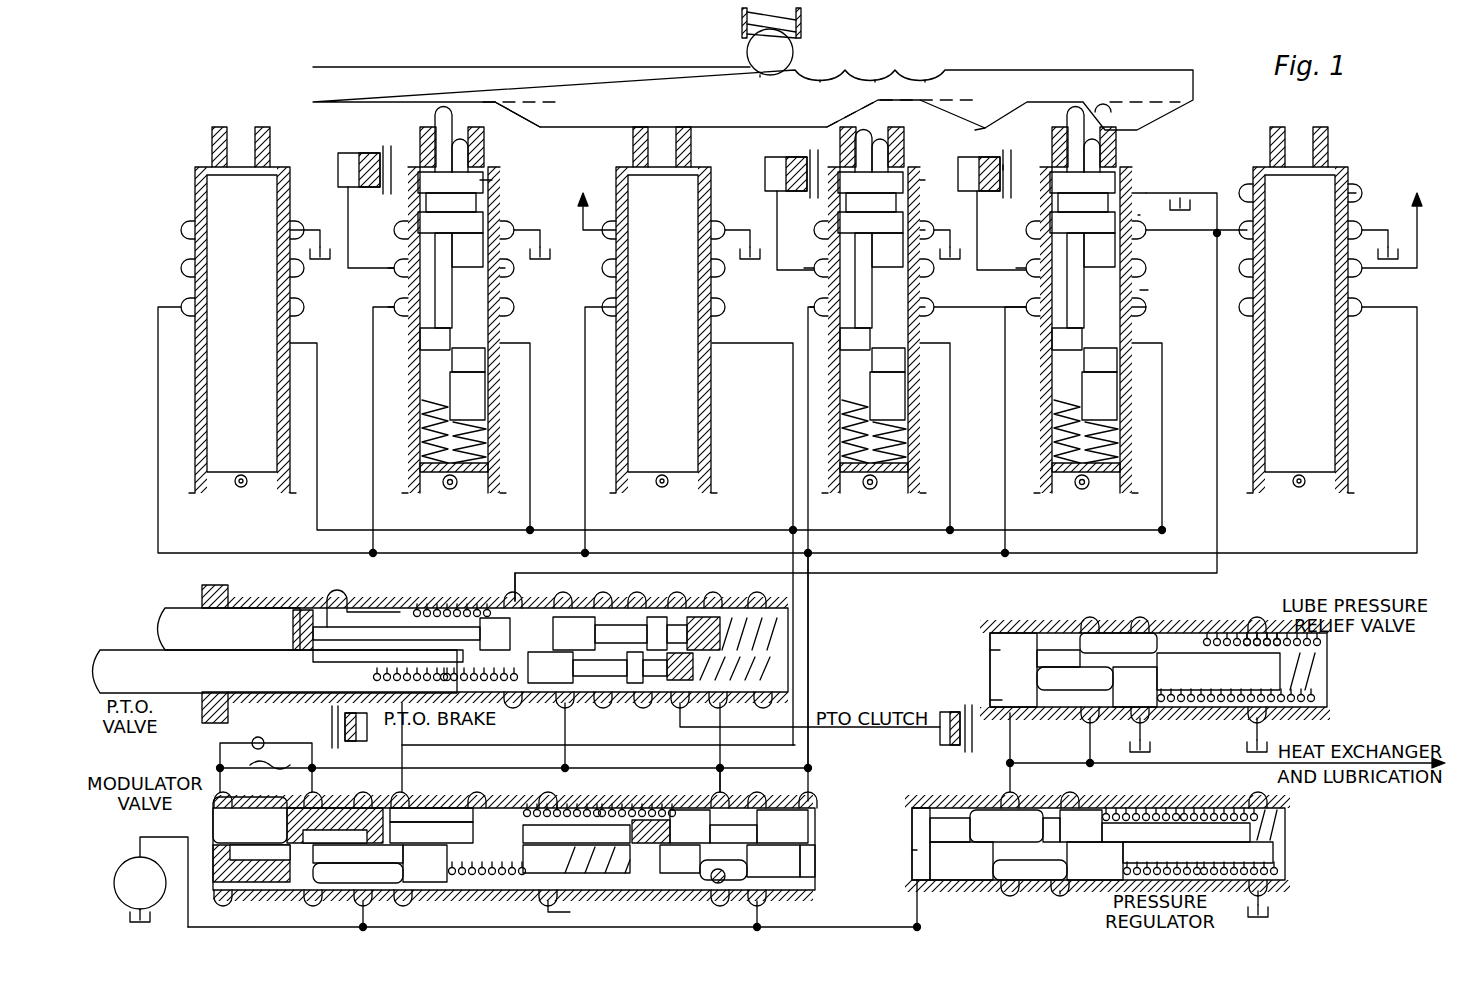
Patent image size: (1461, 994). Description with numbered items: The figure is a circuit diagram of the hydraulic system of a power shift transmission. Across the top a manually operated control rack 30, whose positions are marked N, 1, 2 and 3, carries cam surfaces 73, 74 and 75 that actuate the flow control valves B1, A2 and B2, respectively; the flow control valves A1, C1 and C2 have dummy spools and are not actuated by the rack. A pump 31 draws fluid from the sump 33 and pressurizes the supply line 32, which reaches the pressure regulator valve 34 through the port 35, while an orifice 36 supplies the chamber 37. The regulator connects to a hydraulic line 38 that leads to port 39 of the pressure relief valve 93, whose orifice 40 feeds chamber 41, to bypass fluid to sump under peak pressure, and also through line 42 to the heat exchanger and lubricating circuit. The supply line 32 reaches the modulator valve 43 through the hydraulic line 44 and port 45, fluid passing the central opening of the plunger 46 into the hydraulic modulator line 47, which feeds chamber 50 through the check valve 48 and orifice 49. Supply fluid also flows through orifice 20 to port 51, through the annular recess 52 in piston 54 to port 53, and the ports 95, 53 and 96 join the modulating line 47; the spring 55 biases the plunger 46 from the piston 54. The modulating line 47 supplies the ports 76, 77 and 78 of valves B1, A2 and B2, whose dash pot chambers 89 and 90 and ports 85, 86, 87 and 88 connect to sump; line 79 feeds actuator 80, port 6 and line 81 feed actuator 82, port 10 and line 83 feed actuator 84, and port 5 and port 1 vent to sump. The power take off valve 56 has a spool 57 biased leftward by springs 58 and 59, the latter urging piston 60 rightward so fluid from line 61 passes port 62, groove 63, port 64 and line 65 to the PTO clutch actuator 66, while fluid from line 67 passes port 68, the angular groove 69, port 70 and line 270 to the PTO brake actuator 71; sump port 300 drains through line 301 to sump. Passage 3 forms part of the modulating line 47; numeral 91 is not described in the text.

The control rack 30 is at (315, 100).
The neutral position N is at (770, 89).
The port 1 is at (979, 156).
The second gear position 2 is at (1170, 285).
The passage 3 is at (925, 89).
The cam surface 74 is at (975, 128).
The cam surface 75 is at (520, 132).
The cam surface 73 is at (1110, 117).
The flow control valve A1 is at (225, 120).
The flow control valve C1 is at (620, 165).
The flow control valve C2 is at (1342, 157).
The flow control valve B2 is at (425, 112).
The flow control valve A2 is at (915, 160).
The flow control valve B1 is at (1135, 160).
The hydraulic actuator 84 is at (372, 153).
The hydraulic line 83 is at (350, 207).
The hydraulic actuator line 81 is at (765, 205).
The hydraulic actuator 82 is at (813, 210).
The hydraulic actuator 80 is at (1004, 157).
The port 85 is at (1026, 161).
The hydraulic actuator line 79 is at (985, 220).
The port 86 is at (1018, 258).
The port 87 is at (810, 258).
The dash pot chamber 90 is at (492, 180).
The port 88 is at (1366, 185).
The port 78 is at (386, 300).
The port 10 is at (505, 275).
The dash pot chamber 89 is at (925, 180).
The port 5 is at (925, 222).
The port 6 is at (925, 300).
The port 77 is at (808, 298).
The port 91 is at (1140, 185).
The port 76 is at (1146, 307).
The sump 33 is at (540, 262).
The power take off valve 56 is at (140, 618).
The spool 57 is at (265, 610).
The spring 58 is at (486, 608).
The spring 59 is at (535, 608).
The piston 60 is at (595, 608).
The port 64 is at (675, 610).
The groove 63 is at (718, 602).
The port 62 is at (770, 592).
The port 68 is at (560, 704).
The angular groove 69 is at (603, 703).
The hydraulic line 65 is at (690, 714).
The hydraulic line 61 is at (735, 714).
The port 70 is at (605, 738).
The sump port 300 is at (640, 580).
The hydraulic modulator line 47 is at (815, 632).
The hydraulic line 270 is at (598, 738).
The hydraulic line 67 is at (558, 762).
The hydraulic line 301 is at (671, 766).
The check valve 48 is at (265, 737).
The orifice 49 is at (300, 760).
The hydraulic actuator 71 is at (368, 740).
The modulator valve 43 is at (205, 818).
The chamber 50 is at (267, 830).
The plunger 46 is at (335, 815).
The hydraulic line 44 is at (385, 908).
The port 96 is at (285, 893).
The port 45 is at (353, 897).
The spring 55 is at (600, 810).
The port 53 is at (710, 810).
The piston 54 is at (808, 820).
The port 95 is at (812, 800).
The annular recess 52 is at (750, 858).
The port 51 is at (725, 900).
The orifice 20 is at (765, 908).
The supply line 32 is at (665, 924).
The pump 31 is at (125, 863).
The pressure relief valve 93 is at (1340, 668).
The chamber 41 is at (990, 670).
The orifice 40 is at (995, 710).
The hydraulic line 38 is at (1005, 770).
The port 39 is at (1085, 723).
The line 42 is at (1225, 762).
The hydraulic actuator 66 is at (940, 745).
The pressure regulator valve 34 is at (1300, 830).
The chamber 37 is at (910, 858).
The orifice 36 is at (925, 905).
The port 35 is at (1060, 892).